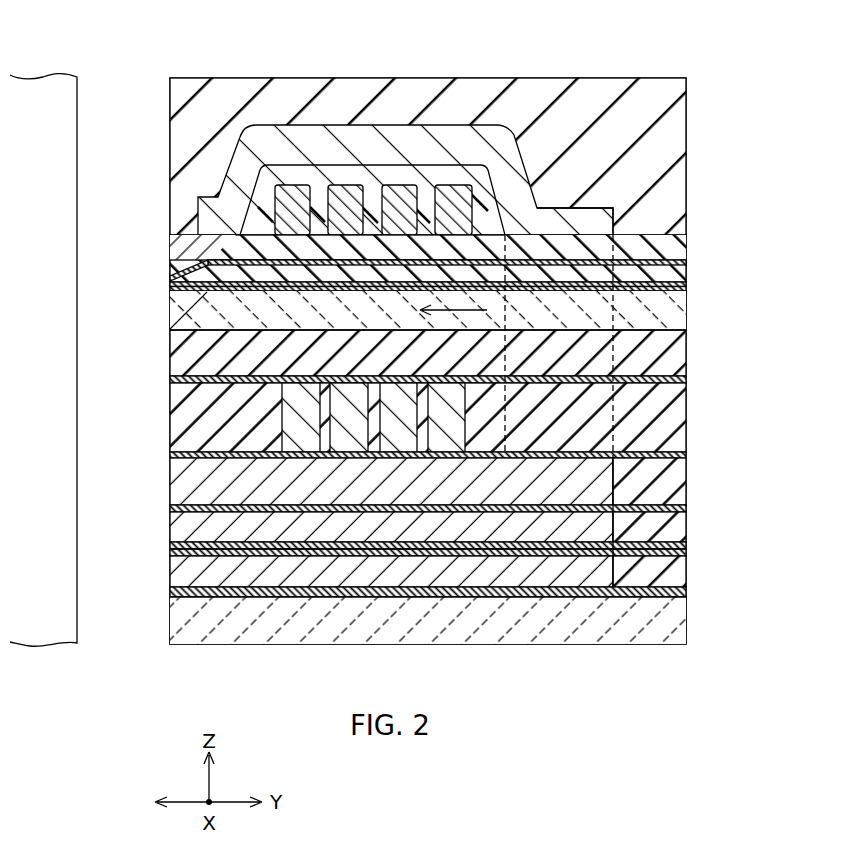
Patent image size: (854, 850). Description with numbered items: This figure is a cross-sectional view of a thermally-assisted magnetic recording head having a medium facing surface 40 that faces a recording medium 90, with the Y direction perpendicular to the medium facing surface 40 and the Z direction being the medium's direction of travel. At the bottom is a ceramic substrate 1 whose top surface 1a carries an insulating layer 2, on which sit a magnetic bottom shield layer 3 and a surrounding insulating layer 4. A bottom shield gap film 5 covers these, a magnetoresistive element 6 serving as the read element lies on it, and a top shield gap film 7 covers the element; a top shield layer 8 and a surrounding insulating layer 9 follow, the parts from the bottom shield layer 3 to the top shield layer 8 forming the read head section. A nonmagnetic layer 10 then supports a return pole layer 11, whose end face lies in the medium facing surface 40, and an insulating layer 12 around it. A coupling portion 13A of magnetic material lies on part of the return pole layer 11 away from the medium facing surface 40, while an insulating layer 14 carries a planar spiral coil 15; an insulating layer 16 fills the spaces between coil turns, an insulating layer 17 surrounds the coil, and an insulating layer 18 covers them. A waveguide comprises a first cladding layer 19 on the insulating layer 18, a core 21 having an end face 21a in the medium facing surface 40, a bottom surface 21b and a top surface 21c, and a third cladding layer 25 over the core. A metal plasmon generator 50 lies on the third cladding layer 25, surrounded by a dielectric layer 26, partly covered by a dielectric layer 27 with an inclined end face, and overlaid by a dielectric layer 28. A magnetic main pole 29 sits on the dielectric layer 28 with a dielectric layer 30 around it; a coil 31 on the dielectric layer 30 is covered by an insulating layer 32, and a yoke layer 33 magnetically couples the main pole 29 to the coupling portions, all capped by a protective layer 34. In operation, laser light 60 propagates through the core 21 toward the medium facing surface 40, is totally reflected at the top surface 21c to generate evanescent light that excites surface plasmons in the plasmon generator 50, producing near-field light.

The substrate 1 is at (197, 644).
The top surface 1a is at (196, 594).
The insulating layer 2 is at (686, 612).
The bottom shield layer 3 is at (170, 570).
The insulating layer 4 is at (686, 594).
The bottom shield gap film 5 is at (686, 577).
The magnetoresistive element 6 is at (192, 547).
The top shield gap film 7 is at (686, 555).
The top shield layer 8 is at (170, 528).
The insulating layer 9 is at (686, 546).
The nonmagnetic layer 10 is at (686, 512).
The return pole layer 11 is at (170, 474).
The insulating layer 12 is at (686, 483).
The coupling portion 13A is at (613, 392).
The insulating layer 14 is at (686, 458).
The coil 15 is at (282, 417).
The insulating layer 16 is at (432, 428).
The insulating layer 17 is at (677, 422).
The insulating layer 18 is at (686, 378).
The first cladding layer 19 is at (686, 355).
The core 21 is at (433, 310).
The end face 21a is at (170, 312).
The bottom surface 21b is at (212, 333).
The top surface 21c is at (543, 208).
The third cladding layer 25 is at (686, 289).
The dielectric layer 26 is at (686, 283).
The dielectric layer 27 is at (686, 272).
The dielectric layer 28 is at (686, 261).
The main pole 29 is at (170, 247).
The dielectric layer 30 is at (686, 245).
The coil 31 is at (293, 187).
The insulating layer 32 is at (342, 165).
The yoke layer 33 is at (379, 125).
The protective layer 34 is at (428, 82).
The medium facing surface 40 is at (459, 365).
The plasmon generator 50 is at (170, 280).
The laser light 60 is at (452, 308).
The recording medium 90 is at (42, 86).